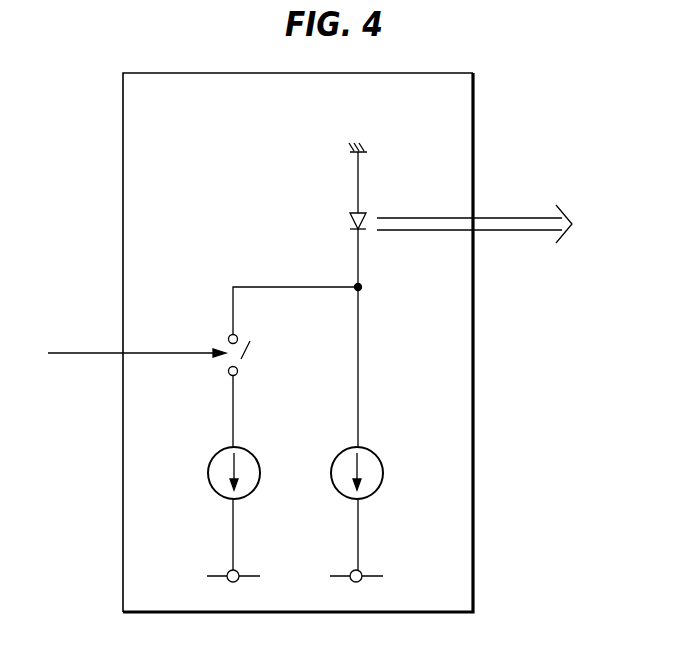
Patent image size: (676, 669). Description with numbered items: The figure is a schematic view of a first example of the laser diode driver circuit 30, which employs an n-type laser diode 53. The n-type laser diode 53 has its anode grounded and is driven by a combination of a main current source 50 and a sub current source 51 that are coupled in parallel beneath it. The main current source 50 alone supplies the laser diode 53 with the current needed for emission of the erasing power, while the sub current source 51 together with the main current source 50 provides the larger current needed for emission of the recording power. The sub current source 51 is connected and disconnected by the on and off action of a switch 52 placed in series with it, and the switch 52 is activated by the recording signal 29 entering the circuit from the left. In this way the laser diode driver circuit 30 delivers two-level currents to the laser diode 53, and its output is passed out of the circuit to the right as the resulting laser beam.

The recording signal 29 is at (65, 353).
The laser diode driver circuit 30 is at (428, 74).
The main current source 50 is at (383, 466).
The sub current source 51 is at (209, 465).
The switch 52 is at (243, 357).
The n-type laser diode 53 is at (372, 216).